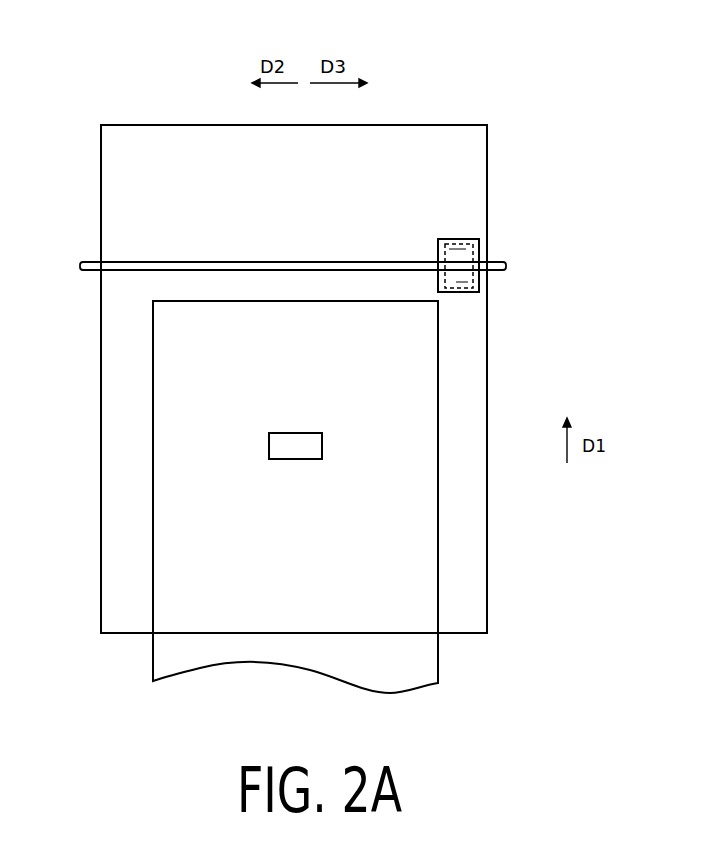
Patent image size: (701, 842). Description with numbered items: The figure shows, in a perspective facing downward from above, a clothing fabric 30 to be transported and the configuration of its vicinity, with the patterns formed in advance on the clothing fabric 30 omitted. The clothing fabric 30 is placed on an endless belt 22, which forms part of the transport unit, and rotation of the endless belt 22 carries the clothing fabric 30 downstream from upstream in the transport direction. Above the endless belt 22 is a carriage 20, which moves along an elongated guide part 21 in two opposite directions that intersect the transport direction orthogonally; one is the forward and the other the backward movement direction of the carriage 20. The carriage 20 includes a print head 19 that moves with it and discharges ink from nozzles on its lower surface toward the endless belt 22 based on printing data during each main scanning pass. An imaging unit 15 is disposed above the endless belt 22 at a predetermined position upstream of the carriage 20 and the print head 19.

The imaging unit 15 is at (287, 434).
The print head 19 is at (470, 297).
The carriage 20 is at (462, 239).
The guide part 21 is at (97, 262).
The endless belt 22 is at (484, 547).
The clothing fabric 30 is at (158, 645).